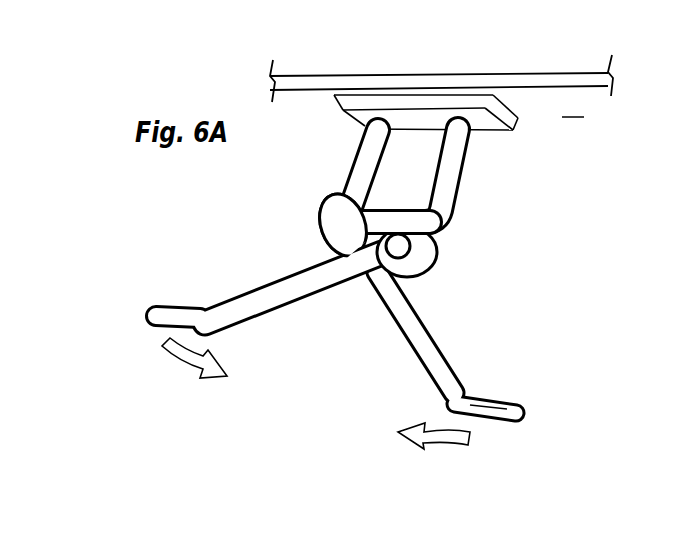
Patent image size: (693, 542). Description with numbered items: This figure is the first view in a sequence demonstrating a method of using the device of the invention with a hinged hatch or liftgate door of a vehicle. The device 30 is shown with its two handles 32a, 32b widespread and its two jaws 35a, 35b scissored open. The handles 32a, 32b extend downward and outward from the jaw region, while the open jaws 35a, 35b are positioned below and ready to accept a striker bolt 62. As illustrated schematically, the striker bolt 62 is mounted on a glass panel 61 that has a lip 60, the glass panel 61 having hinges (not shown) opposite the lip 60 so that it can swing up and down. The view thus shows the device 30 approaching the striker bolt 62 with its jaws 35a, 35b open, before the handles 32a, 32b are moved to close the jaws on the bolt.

The device 30 is at (334, 317).
The handle 32a is at (136, 301).
The handle 32b is at (537, 427).
The jaw 35a is at (312, 201).
The jaw 35b is at (448, 266).
The lip 60 is at (598, 100).
The glass panel 61 is at (573, 118).
The striker bolt 62 is at (471, 173).